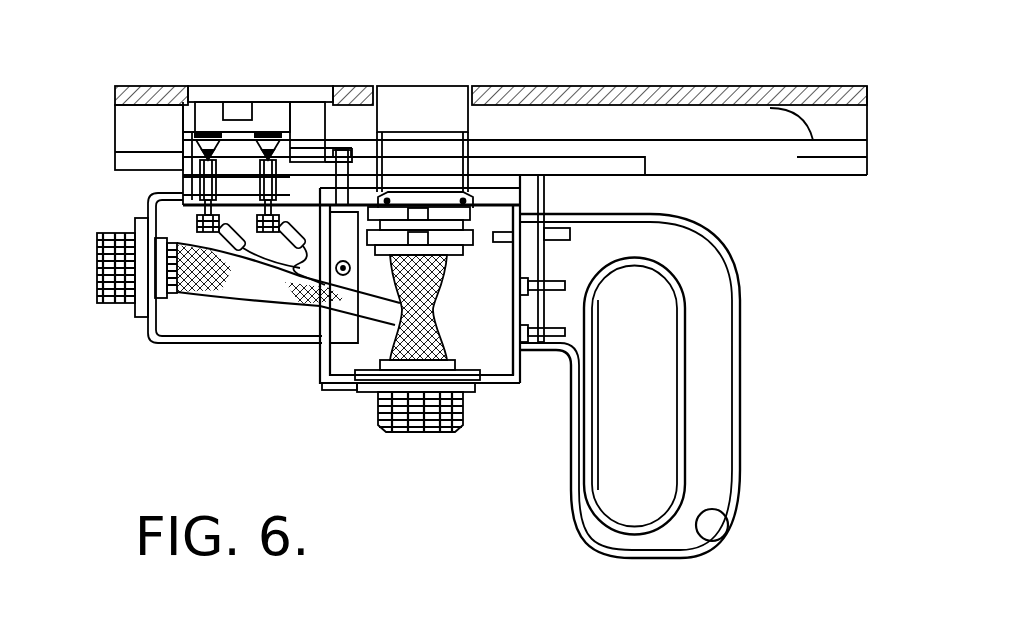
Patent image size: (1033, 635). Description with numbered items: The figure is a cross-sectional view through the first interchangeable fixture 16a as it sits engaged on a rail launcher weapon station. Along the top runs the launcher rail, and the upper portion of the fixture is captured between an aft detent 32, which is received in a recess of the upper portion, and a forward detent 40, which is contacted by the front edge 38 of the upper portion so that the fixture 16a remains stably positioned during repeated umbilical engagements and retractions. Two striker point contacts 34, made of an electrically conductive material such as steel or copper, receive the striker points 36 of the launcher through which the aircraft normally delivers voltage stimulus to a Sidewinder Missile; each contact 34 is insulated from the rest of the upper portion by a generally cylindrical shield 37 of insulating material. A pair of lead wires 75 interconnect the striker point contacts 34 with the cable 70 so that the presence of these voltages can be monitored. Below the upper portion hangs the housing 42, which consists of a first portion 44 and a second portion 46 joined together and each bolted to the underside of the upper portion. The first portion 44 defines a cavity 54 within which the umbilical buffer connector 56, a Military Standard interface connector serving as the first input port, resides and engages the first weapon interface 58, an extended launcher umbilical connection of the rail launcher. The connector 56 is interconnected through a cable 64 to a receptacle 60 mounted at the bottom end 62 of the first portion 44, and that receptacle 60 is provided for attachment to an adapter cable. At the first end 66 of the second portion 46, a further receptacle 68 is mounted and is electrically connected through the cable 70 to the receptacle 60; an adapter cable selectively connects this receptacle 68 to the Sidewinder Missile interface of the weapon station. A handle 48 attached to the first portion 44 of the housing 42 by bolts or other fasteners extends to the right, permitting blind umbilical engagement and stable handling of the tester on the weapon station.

The first interchangeable fixture 16a is at (518, 457).
The aft detent 32 is at (310, 117).
The striker point contacts 34 is at (173, 173).
The striker points 36 is at (192, 135).
The cylindrical shield 37 is at (222, 168).
The front edge 38 is at (178, 132).
The forward detent 40 is at (147, 127).
The housing 42 is at (320, 353).
The first portion 44 is at (342, 392).
The second portion 46 is at (195, 325).
The handle 48 is at (700, 357).
The cavity 54 is at (495, 348).
The umbilical buffer connector 56 is at (428, 303).
The first weapon interface 58 is at (420, 102).
The receptacle 60 is at (412, 435).
The bottom end 62 is at (500, 393).
The cable 64 is at (545, 218).
The first end 66 is at (145, 323).
The receptacle 68 is at (100, 305).
The cable 70 is at (212, 267).
The lead wires 75 is at (265, 257).